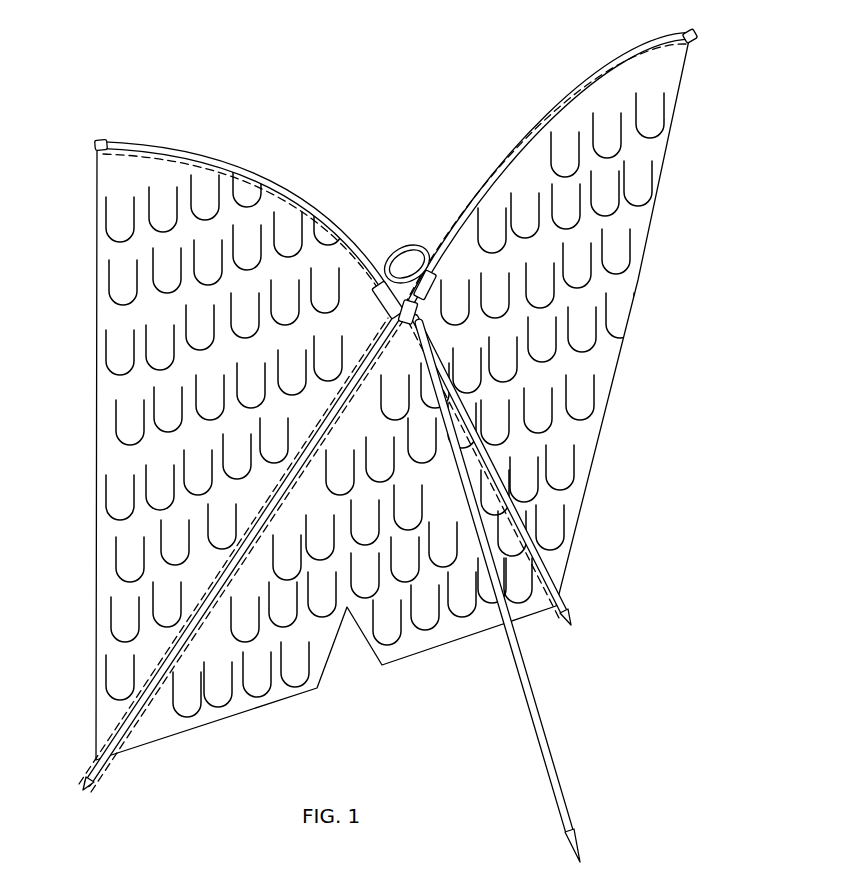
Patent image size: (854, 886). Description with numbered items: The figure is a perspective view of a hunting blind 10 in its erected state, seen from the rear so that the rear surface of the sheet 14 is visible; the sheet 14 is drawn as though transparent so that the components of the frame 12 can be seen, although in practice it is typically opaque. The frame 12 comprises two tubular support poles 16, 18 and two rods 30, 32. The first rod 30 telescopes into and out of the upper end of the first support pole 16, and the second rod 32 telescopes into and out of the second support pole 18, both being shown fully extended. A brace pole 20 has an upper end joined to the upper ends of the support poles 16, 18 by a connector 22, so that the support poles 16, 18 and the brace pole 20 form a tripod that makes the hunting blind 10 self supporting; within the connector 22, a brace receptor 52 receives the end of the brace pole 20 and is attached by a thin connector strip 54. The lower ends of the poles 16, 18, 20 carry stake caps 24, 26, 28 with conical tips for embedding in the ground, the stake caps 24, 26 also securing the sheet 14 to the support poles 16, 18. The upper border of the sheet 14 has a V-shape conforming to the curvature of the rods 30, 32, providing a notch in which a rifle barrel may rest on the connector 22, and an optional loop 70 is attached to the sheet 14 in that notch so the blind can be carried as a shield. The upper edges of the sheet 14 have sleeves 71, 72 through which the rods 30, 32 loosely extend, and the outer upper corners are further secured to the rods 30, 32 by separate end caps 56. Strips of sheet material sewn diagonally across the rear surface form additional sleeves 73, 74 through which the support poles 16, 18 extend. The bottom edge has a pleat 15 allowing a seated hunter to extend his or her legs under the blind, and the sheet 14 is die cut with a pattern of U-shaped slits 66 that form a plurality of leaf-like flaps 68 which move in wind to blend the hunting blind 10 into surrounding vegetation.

The hunting blind 10 is at (425, 686).
The frame 12 is at (456, 220).
The sheet 14 is at (583, 429).
The pleat 15 is at (380, 656).
The first support pole 16 is at (121, 731).
The second support pole 18 is at (552, 573).
The brace pole 20 is at (538, 708).
The connector 22 is at (392, 314).
The stake cap 24 is at (97, 773).
The stake cap 26 is at (562, 611).
The stake cap 28 is at (580, 833).
The first rod 30 is at (525, 141).
The second rod 32 is at (262, 180).
The brace receptor 52 is at (418, 320).
The connector strip 54 is at (428, 294).
The end cap 56 is at (108, 145).
The slits 66 is at (200, 350).
The flaps 68 is at (210, 350).
The loop 70 is at (406, 247).
The sleeve 71 is at (652, 60).
The sleeve 72 is at (132, 160).
The sleeve 73 is at (171, 652).
The sleeve 74 is at (520, 510).